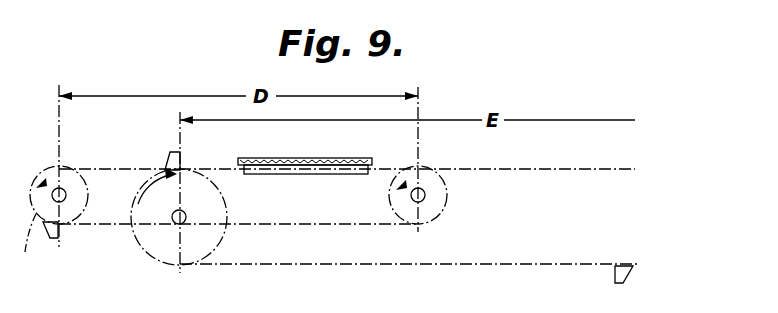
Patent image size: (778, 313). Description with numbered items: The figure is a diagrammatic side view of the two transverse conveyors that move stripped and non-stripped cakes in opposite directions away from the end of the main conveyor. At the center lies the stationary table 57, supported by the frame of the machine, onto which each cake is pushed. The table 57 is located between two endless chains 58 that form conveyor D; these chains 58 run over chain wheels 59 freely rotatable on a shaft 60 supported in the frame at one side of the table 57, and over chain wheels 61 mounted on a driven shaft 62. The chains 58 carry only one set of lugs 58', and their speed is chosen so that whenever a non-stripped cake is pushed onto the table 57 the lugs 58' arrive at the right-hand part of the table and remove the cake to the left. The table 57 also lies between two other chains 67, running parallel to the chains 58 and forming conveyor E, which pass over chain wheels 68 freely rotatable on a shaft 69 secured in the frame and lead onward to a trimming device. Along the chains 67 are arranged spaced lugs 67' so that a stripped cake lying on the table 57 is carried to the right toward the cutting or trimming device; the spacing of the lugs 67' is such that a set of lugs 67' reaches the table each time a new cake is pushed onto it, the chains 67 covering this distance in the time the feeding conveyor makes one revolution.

The stationary table 57 is at (340, 175).
The endless chains 58 is at (347, 183).
The lugs 58' is at (70, 240).
The chain wheels 59 is at (440, 212).
The shaft 60 is at (422, 190).
The chain wheels 61 is at (34, 244).
The shaft 62 is at (64, 189).
The chains 67 is at (410, 279).
The lugs 67' is at (195, 152).
The chain wheels 68 is at (172, 266).
The shaft 69 is at (175, 221).